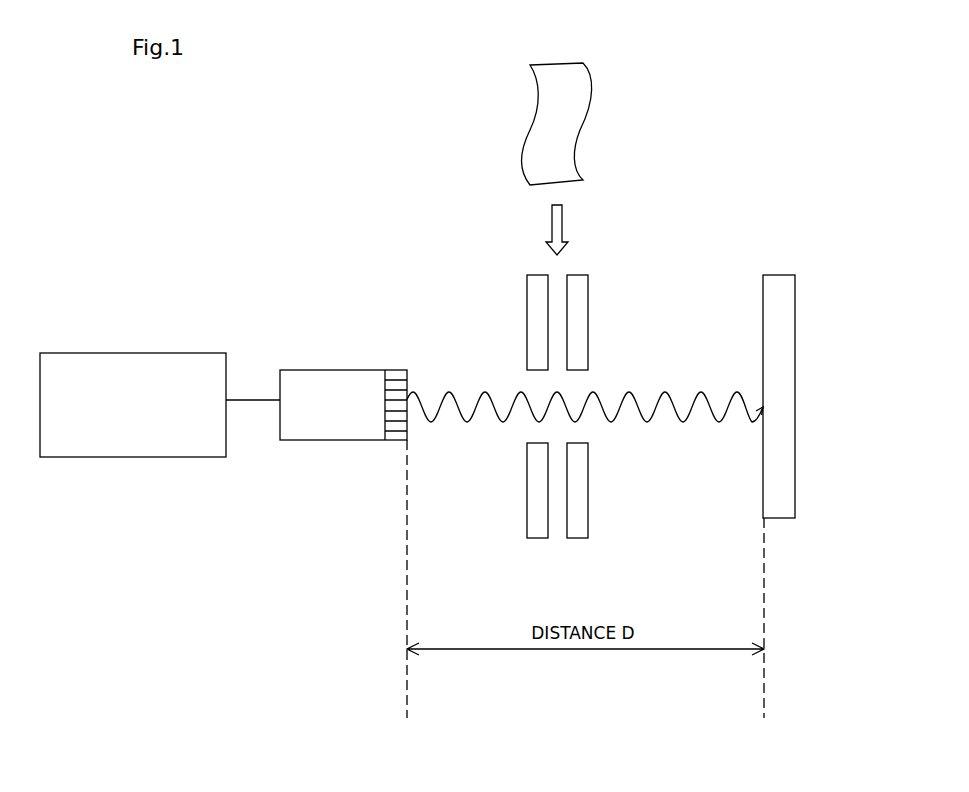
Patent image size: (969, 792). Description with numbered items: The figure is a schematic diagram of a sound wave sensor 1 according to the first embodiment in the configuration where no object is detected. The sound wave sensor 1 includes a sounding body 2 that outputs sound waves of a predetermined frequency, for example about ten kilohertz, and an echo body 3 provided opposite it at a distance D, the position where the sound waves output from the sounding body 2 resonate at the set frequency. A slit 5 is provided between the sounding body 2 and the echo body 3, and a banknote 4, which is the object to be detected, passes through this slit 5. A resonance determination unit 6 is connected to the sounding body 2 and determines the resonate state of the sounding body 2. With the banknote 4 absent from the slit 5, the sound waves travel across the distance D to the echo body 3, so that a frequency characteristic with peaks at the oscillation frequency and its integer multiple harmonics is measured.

The sound wave sensor 1 is at (709, 188).
The sounding body 2 is at (327, 370).
The echo body 3 is at (795, 312).
The banknote 4 is at (592, 83).
The slit 5 is at (557, 288).
The resonance determination unit 6 is at (102, 352).